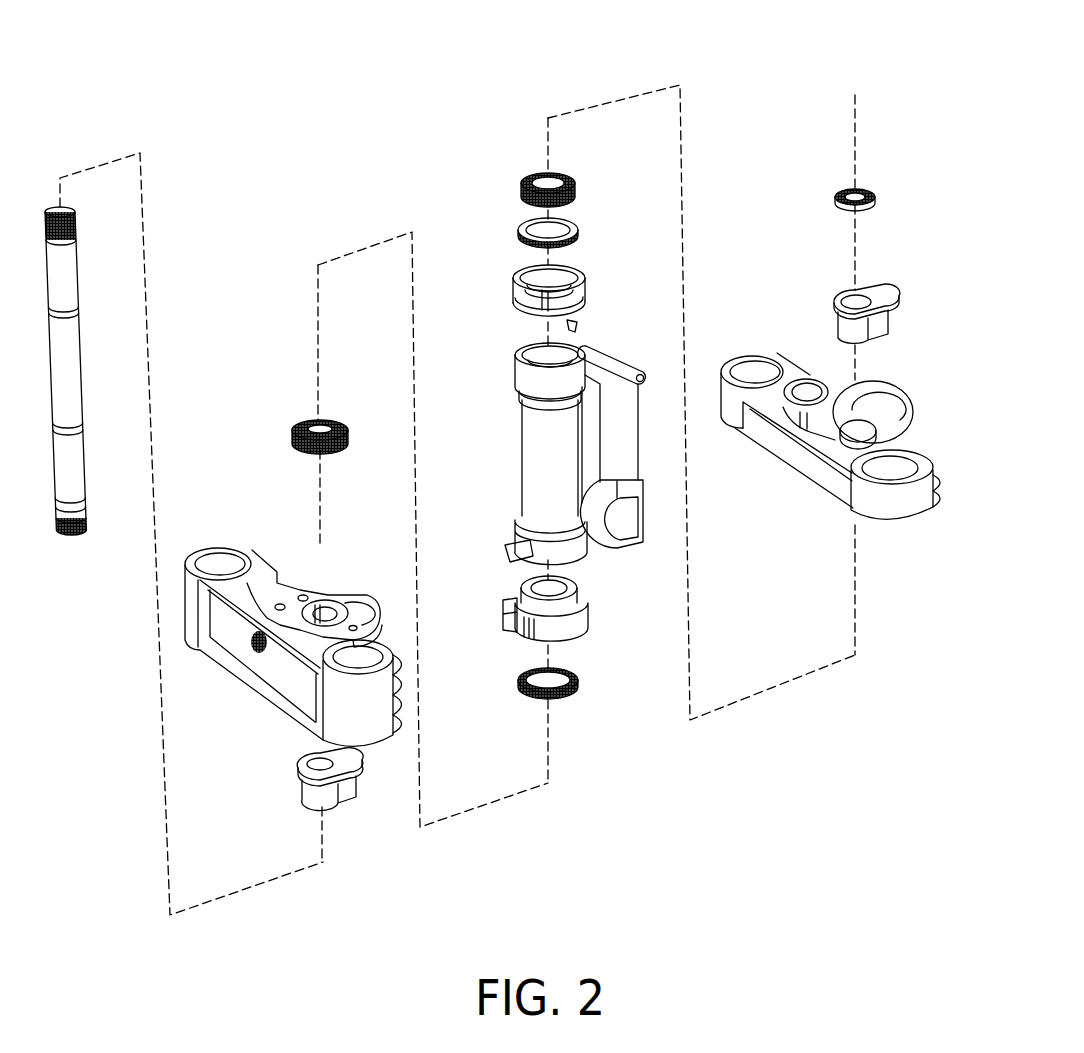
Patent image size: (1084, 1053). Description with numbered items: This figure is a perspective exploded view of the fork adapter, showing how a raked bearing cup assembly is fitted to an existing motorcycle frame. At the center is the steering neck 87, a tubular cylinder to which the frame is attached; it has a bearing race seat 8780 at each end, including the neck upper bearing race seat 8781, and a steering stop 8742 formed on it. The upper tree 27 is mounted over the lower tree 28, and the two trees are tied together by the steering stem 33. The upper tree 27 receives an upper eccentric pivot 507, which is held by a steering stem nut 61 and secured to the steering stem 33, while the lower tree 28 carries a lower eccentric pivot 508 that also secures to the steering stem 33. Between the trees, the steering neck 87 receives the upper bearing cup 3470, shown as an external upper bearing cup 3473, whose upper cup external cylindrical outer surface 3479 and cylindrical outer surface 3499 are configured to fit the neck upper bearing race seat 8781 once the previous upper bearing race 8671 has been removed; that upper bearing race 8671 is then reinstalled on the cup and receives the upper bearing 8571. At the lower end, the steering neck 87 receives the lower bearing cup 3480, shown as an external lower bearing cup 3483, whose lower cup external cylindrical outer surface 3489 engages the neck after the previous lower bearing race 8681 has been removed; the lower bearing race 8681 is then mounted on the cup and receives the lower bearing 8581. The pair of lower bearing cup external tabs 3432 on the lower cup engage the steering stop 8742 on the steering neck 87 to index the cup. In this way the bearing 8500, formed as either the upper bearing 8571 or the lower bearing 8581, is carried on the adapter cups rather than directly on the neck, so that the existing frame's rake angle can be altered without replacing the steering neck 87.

The steering stem 33 is at (67, 347).
The lower tree 28 is at (197, 633).
The lower eccentric pivot 508 is at (312, 790).
The lower bearing 8581 is at (293, 440).
The bearing 8500 is at (535, 178).
The upper bearing 8571 is at (515, 195).
The upper bearing race 8671 is at (517, 245).
The bearing race seat 8780 is at (567, 178).
The upper bearing cup 3470 is at (587, 277).
The external upper bearing cup 3473 is at (522, 303).
The upper cup external cylindrical outer surface 3479 is at (525, 310).
The cylindrical outer surface 3499 is at (575, 307).
The neck upper bearing race seat 8781 is at (577, 347).
The steering neck 87 is at (517, 457).
The steering stop 8742 is at (508, 545).
The lower cup external cylindrical outer surface 3489 is at (582, 590).
The lower bearing cup external tabs 3432 is at (508, 600).
The external lower bearing cup 3483 is at (590, 615).
The lower bearing cup 3480 is at (580, 632).
The lower bearing race 8681 is at (580, 692).
The steering stem nut 61 is at (878, 202).
The upper eccentric pivot 507 is at (900, 315).
The upper tree 27 is at (893, 510).